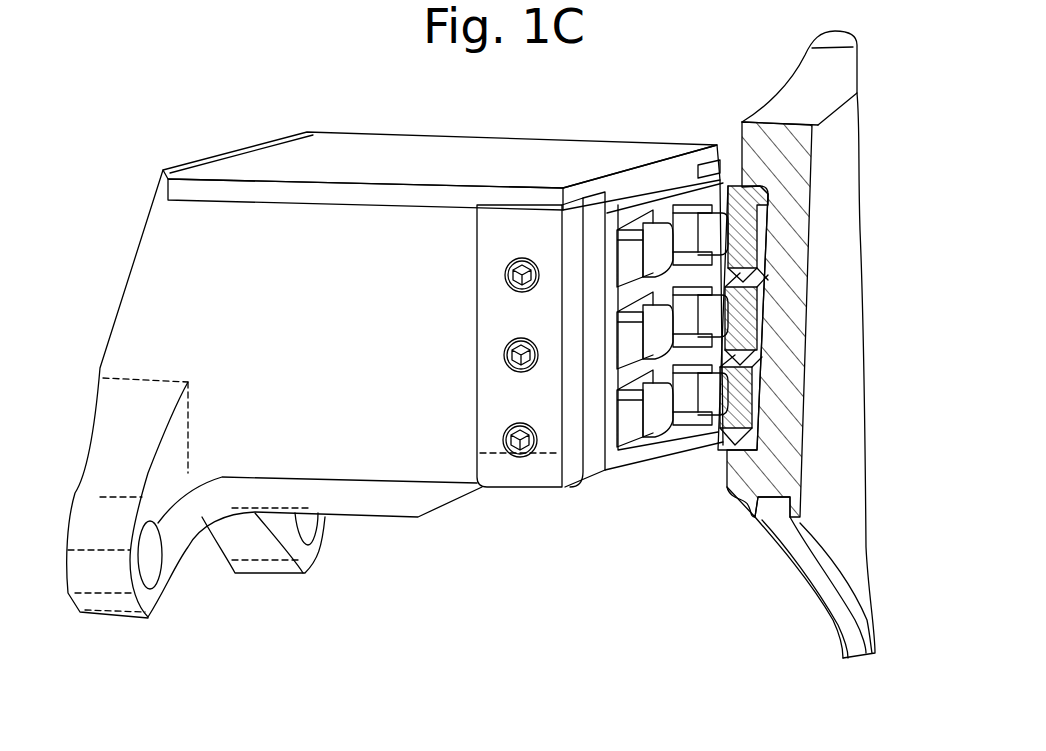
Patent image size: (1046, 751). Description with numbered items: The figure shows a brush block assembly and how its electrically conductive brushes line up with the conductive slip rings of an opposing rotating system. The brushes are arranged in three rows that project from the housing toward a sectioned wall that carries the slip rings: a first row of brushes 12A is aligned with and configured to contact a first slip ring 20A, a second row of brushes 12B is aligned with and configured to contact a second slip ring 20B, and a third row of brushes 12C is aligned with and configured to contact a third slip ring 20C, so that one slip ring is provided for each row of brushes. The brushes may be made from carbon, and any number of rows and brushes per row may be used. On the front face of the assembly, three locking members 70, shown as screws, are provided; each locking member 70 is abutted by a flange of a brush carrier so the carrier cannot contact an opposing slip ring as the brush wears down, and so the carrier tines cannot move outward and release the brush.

The locking member 70 is at (513, 340).
The first row of brushes 12A is at (657, 238).
The second row of brushes 12B is at (660, 322).
The third row of brushes 12C is at (707, 400).
The first slip ring 20A is at (747, 235).
The second slip ring 20B is at (740, 334).
The third slip ring 20C is at (737, 405).